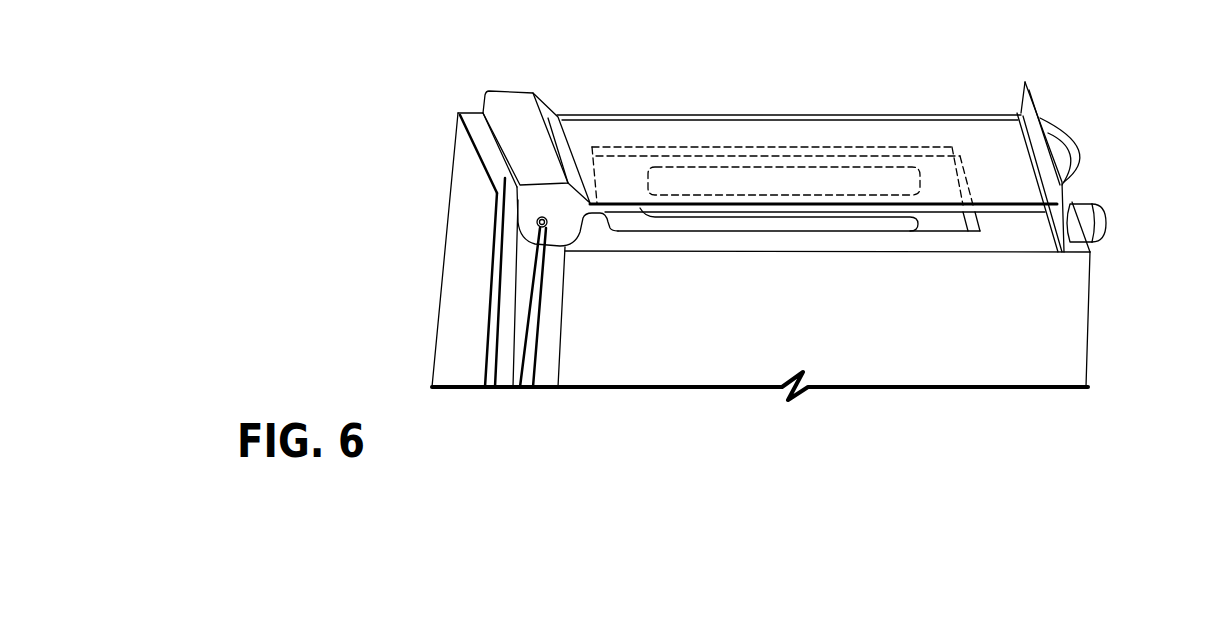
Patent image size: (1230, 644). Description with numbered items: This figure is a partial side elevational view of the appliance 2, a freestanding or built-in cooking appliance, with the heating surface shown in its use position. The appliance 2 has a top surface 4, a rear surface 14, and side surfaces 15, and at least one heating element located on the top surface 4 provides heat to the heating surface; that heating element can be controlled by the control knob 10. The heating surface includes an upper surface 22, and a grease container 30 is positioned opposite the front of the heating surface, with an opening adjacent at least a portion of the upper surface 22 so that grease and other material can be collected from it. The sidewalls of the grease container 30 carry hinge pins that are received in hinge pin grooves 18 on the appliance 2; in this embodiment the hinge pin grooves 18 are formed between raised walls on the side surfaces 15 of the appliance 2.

The appliance 2 is at (1097, 326).
The top surface 4 is at (1015, 253).
The control knob 10 is at (1090, 222).
The rear surface 14 is at (468, 237).
The side surfaces 15 is at (695, 340).
The hinge pin grooves 18 is at (533, 323).
The upper surface 22 is at (993, 130).
The grease container 30 is at (522, 100).